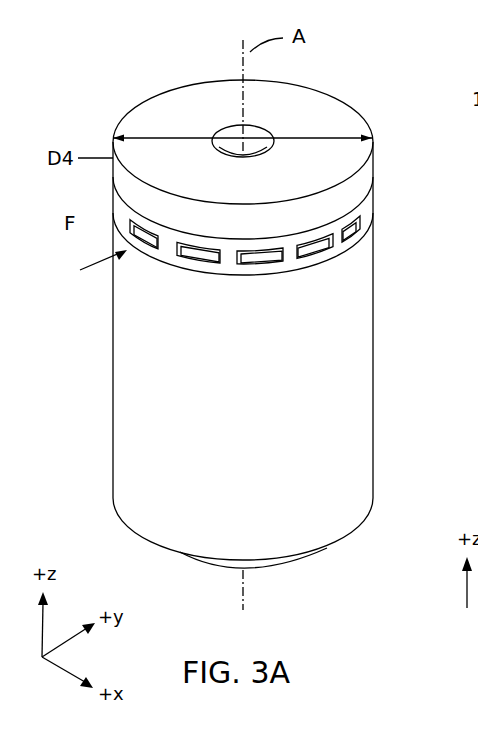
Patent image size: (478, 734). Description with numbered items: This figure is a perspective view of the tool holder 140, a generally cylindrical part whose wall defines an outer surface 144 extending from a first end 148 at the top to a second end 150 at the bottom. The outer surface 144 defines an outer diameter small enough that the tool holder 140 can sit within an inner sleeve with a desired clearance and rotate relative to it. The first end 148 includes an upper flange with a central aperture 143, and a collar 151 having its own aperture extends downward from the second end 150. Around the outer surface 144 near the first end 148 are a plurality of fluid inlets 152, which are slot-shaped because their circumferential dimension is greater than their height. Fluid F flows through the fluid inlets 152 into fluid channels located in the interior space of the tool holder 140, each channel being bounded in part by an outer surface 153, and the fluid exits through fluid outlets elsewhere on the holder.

The tool holder 140 is at (360, 68).
The aperture 143 is at (230, 127).
The outer surface 144 is at (353, 387).
The first end 148 is at (168, 110).
The second end 150 is at (125, 518).
The collar 151 is at (272, 567).
The fluid inlets 152 is at (303, 259).
The outer surface of fluid channel 153 is at (360, 202).